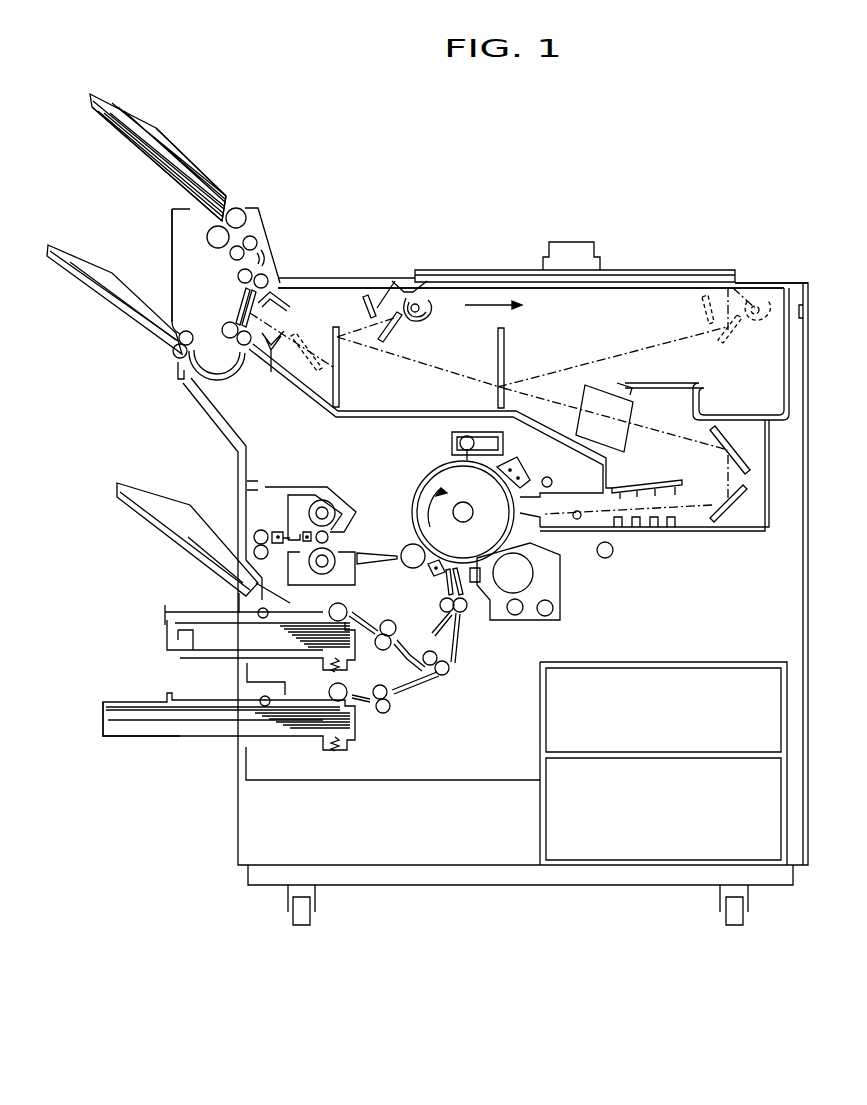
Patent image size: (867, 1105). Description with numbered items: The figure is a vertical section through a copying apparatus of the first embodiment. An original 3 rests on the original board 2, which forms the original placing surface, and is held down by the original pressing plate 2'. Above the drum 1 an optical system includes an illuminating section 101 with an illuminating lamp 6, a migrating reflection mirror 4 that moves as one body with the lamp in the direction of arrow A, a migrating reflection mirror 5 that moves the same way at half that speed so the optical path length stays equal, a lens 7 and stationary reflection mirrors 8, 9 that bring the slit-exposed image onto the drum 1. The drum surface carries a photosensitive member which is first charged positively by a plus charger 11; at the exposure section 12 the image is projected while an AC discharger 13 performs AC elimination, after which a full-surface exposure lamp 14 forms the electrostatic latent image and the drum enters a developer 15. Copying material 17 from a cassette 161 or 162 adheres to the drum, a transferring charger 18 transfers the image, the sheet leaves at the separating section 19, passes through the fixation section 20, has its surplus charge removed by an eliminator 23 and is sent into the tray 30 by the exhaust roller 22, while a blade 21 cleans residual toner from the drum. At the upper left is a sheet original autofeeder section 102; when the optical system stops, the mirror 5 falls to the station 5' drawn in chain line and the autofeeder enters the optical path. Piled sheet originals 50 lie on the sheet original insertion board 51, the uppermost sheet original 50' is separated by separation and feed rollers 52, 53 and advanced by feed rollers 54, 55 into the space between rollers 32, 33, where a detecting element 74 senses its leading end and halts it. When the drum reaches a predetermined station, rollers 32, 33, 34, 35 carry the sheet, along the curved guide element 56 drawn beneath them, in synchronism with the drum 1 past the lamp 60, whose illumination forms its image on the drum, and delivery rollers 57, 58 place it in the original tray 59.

The drum 1 is at (435, 463).
The original board 2 is at (543, 259).
The original pressing plate 2' is at (551, 242).
The original 3 is at (462, 270).
The migrating reflection mirror 4 is at (394, 330).
The migrating reflection mirror 5 is at (352, 371).
The station of mirror 5' is at (296, 352).
The illuminating lamp 6 is at (425, 312).
The lens 7 is at (643, 407).
The stationary reflection mirror 8 is at (735, 447).
The stationary reflection mirror 9 is at (735, 503).
The plus charger 11 is at (528, 472).
The exposure section 12 is at (512, 514).
The AC discharger 13 is at (542, 520).
The full-surface exposure lamp 14 is at (605, 558).
The developer 15 is at (515, 610).
The copying material 17 is at (228, 628).
The transferring charger 18 is at (446, 588).
The separating section 19 is at (405, 540).
The fixation section 20 is at (343, 505).
The blade 21 is at (503, 446).
The exhaust roller 22 is at (254, 538).
The eliminator 23 is at (278, 530).
The tray 30 is at (168, 525).
The roller 32 is at (238, 274).
The roller 33 is at (268, 279).
The roller 34 is at (224, 328).
The roller 35 is at (246, 345).
The piled sheet originals 50 is at (148, 157).
The uppermost sheet original 50' is at (199, 162).
The sheet original insertion board 51 is at (163, 178).
The separation and feed roller 52 is at (239, 208).
The separation and feed roller 53 is at (208, 232).
The feed roller 54 is at (211, 243).
The feed roller 55 is at (260, 243).
The curved guide 56 is at (216, 370).
The delivery roller 57 is at (173, 353).
The delivery roller 58 is at (180, 330).
The original tray 59 is at (118, 338).
The lamp 60 is at (267, 373).
The detecting element 74 is at (240, 292).
The illuminating section 101 is at (381, 290).
The sheet original autofeeder section 102 is at (243, 165).
The cassette 161 is at (180, 652).
The cassette 162 is at (150, 740).
The arrow A is at (493, 354).